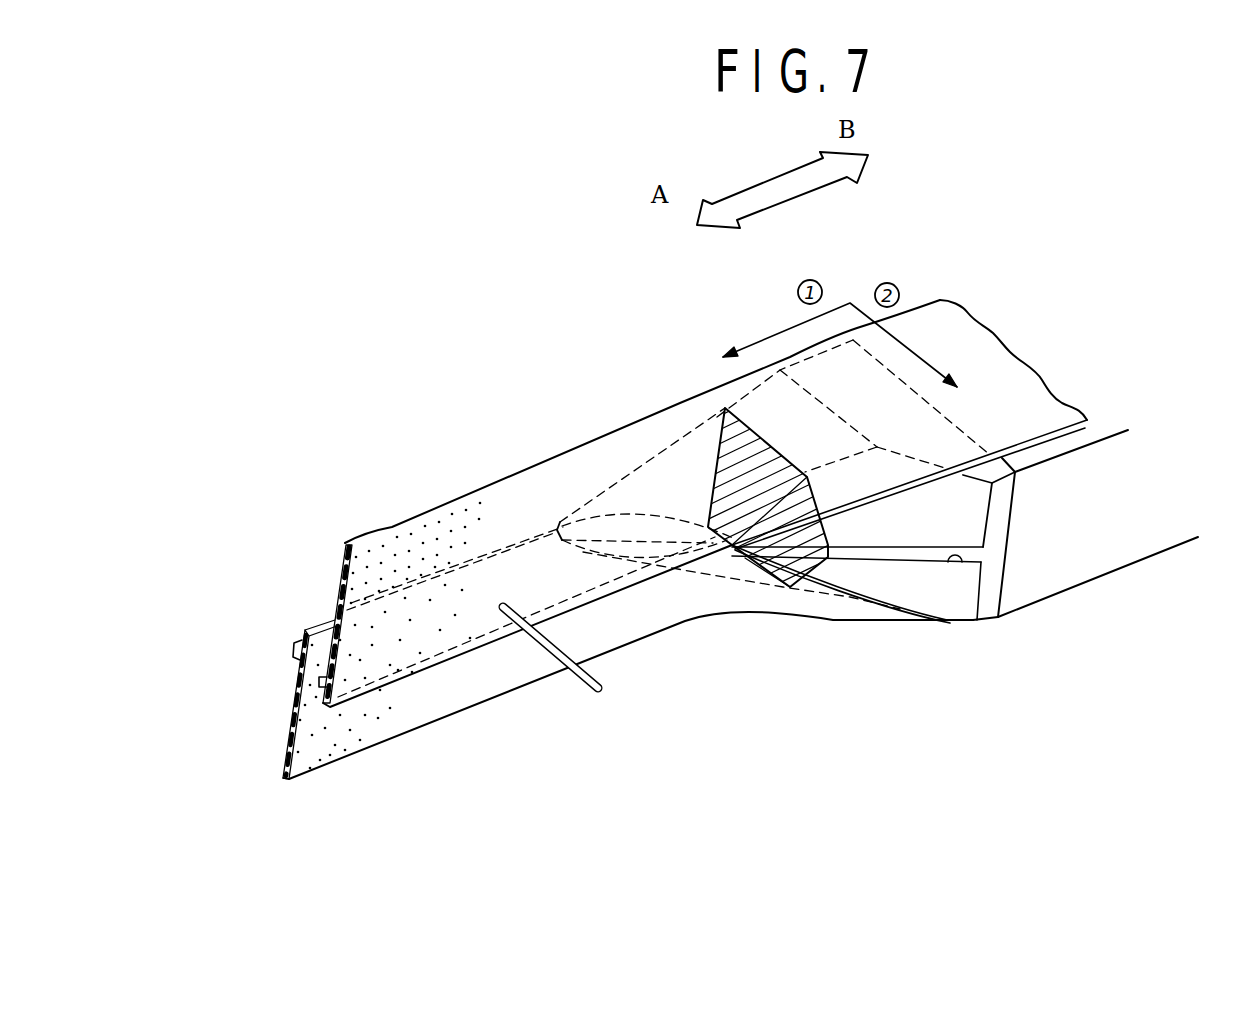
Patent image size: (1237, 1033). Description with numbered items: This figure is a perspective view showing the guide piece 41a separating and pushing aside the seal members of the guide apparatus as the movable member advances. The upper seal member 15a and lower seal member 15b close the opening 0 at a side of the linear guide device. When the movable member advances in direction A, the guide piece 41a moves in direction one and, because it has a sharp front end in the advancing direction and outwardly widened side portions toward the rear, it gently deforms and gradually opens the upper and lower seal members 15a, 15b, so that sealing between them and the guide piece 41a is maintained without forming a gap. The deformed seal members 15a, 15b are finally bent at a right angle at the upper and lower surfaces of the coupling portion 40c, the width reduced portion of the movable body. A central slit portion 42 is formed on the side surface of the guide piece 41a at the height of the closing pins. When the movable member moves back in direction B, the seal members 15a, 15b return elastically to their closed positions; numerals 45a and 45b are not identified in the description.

The upper seal member 15a is at (463, 593).
The lower seal member 15b is at (492, 673).
The engaging bracket 45a is at (313, 681).
The engaging projection 45b is at (293, 648).
The opening 0 is at (850, 570).
The guide piece 41a is at (917, 532).
The central slit portion 42 is at (963, 565).
The coupling portion 40c is at (1050, 453).